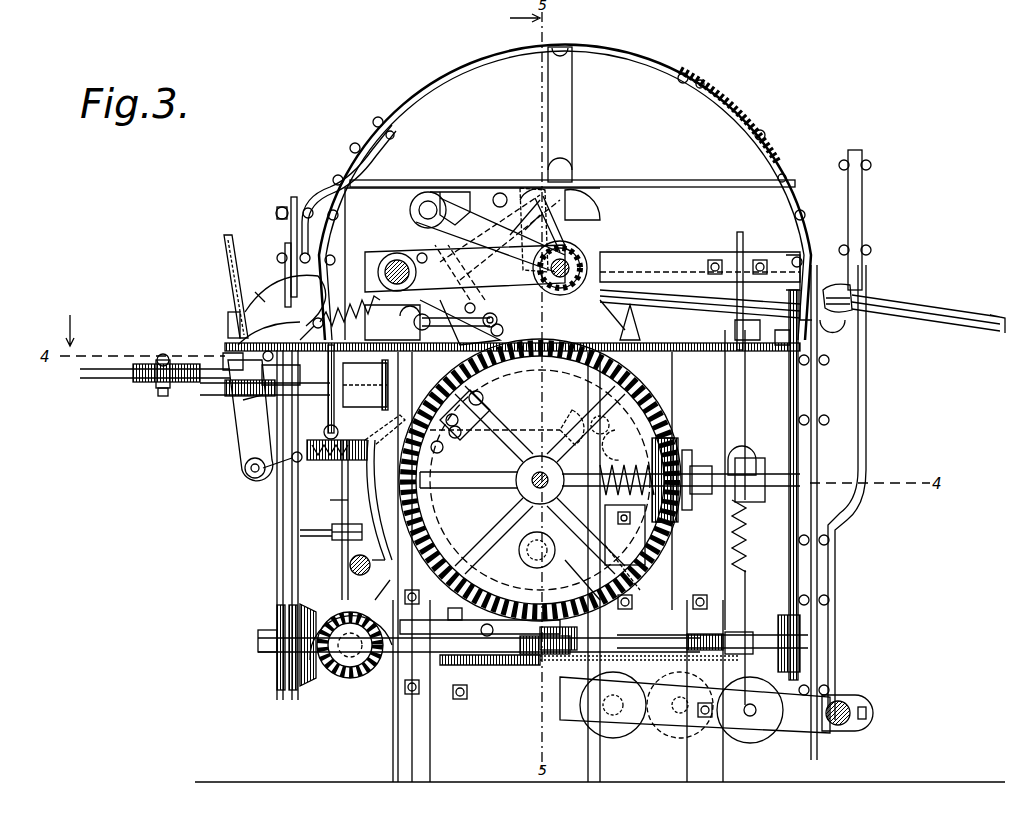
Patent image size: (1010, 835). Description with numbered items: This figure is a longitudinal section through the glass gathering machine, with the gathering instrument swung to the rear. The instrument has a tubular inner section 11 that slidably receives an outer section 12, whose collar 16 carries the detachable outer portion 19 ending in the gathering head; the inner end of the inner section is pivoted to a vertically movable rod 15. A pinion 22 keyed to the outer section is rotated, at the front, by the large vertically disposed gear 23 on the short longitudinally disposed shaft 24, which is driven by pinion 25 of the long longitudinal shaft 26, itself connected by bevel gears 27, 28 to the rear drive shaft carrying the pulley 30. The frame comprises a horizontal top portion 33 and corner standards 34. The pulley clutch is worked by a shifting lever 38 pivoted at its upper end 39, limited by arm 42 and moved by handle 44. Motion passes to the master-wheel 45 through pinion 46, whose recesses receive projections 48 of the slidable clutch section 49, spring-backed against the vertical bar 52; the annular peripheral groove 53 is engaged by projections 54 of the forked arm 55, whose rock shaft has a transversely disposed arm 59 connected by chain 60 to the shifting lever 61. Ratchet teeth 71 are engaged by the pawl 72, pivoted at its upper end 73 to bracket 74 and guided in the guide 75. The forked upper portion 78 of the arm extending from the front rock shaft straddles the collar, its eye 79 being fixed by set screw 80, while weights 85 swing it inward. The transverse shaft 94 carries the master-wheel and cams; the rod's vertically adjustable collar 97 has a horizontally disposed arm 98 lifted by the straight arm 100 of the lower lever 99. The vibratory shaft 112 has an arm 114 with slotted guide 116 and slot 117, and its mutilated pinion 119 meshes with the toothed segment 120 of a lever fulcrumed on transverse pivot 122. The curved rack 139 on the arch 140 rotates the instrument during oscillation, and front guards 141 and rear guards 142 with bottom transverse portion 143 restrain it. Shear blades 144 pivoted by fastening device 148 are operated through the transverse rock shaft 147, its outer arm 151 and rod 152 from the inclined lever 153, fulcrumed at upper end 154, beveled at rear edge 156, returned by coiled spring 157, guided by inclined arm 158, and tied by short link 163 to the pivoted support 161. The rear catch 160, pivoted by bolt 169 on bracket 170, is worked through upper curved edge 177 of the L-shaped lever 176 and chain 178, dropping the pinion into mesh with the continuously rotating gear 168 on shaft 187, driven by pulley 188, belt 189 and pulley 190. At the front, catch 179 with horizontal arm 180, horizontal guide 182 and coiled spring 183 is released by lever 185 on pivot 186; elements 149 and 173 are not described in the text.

The inner section 11 is at (708, 304).
The outer section 12 is at (786, 272).
The vertically movable rod 15 is at (566, 578).
The collar 16 is at (852, 295).
The outer portion 19 is at (998, 316).
The pinion 22 is at (822, 320).
The large vertically disposed gear 23 is at (793, 392).
The short longitudinally disposed shaft 24 is at (706, 496).
The pinion 25 is at (790, 618).
The long longitudinal shaft 26 is at (755, 648).
The bevel gear 27 is at (310, 686).
The bevel gear 28 is at (348, 680).
The pulley 30 is at (330, 598).
The horizontal top portion 33 is at (392, 322).
The corner standards 34 is at (400, 742).
The shifting lever 38 is at (327, 500).
The upper end 39 is at (380, 446).
The arm 42 is at (332, 528).
The handle 44 is at (316, 543).
The master-wheel 45 is at (435, 449).
The pinion 46 is at (735, 465).
The projections 48 is at (327, 461).
The slidable clutch section 49 is at (632, 462).
The vertical bar 52 is at (598, 420).
The annular peripheral groove 53 is at (628, 545).
The projections 54 is at (665, 438).
The forked arm 55 is at (688, 450).
The transversely disposed arm 59 is at (512, 359).
The chain 60 is at (621, 433).
The shifting lever 61 is at (395, 405).
The ratchet teeth 71 is at (630, 378).
The pawl 72 is at (845, 703).
The upper end 73 is at (540, 196).
The bracket 74 is at (578, 204).
The guide 75 is at (638, 322).
The forked upper portion 78 is at (859, 492).
The eye 79 is at (852, 728).
The set screw 80 is at (868, 713).
The weights 85 is at (620, 722).
The transverse shaft 94 is at (518, 480).
The vertically adjustable collar 97 is at (640, 641).
The horizontally disposed arm 98 is at (677, 705).
The lower lever 99 is at (480, 620).
The straight arm 100 is at (515, 663).
The vibratory shaft 112 is at (573, 258).
The arm 114 is at (660, 258).
The slotted guide 116 is at (778, 345).
The slot 117 is at (805, 345).
The mutilated pinion 119 is at (588, 262).
The toothed segment 120 is at (497, 244).
The transverse pivot 122 is at (400, 262).
The curved rack 139 is at (722, 98).
The arch 140 is at (612, 62).
The front guards 141 is at (868, 190).
The rear guards 142 is at (224, 250).
The bottom transverse portion 143 is at (231, 362).
The blades 144 is at (100, 378).
The transverse rock shaft 147 is at (350, 566).
The fastening device 148 is at (162, 360).
The arm 149 is at (379, 500).
The outer arm 151 is at (378, 520).
The rod 152 is at (495, 421).
The inclined lever 153 is at (498, 310).
The upper end 154 is at (428, 195).
The rear edge 156 is at (482, 415).
The coiled spring 157 is at (340, 317).
The inclined arm 158 is at (468, 208).
The rear catch 160 is at (298, 190).
The pivoted support 161 is at (470, 322).
The short link 163 is at (452, 313).
The continuously rotating gear 168 is at (324, 432).
The bolt 169 is at (276, 213).
The bracket 170 is at (324, 178).
The pin 173 is at (264, 283).
The L-shaped lever 176 is at (236, 405).
The upper curved edge 177 is at (314, 282).
The chain 178 is at (342, 472).
The front catch 179 is at (740, 232).
The horizontal arm 180 is at (745, 458).
The horizontal guide 182 is at (735, 330).
The coiled spring 183 is at (748, 570).
The lever 185 is at (522, 556).
The pivot 186 is at (622, 567).
The short longitudinally disposed shaft 187 is at (366, 385).
The pulley 188 is at (270, 410).
The belt 189 is at (277, 536).
The pulley 190 is at (272, 692).